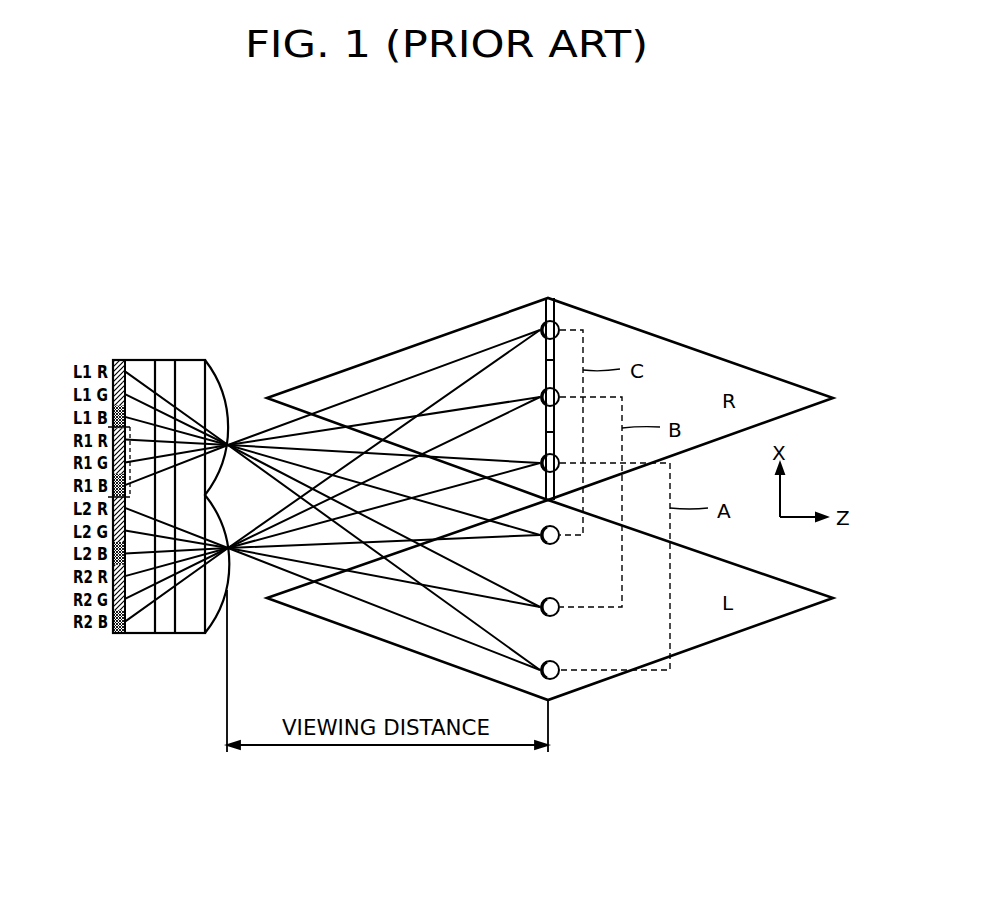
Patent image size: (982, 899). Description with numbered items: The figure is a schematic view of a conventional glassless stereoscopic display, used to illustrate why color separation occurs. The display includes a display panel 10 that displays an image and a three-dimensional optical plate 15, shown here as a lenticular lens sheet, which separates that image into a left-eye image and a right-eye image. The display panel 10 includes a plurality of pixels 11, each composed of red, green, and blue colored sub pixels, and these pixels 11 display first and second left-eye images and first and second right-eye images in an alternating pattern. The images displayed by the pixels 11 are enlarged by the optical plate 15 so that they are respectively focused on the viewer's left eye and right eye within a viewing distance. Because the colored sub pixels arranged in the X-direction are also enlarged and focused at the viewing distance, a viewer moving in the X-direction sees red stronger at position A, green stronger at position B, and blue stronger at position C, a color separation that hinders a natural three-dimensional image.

The display panel 10 is at (146, 445).
The pixels 11 is at (108, 449).
The 3D optical plate 15 is at (191, 375).